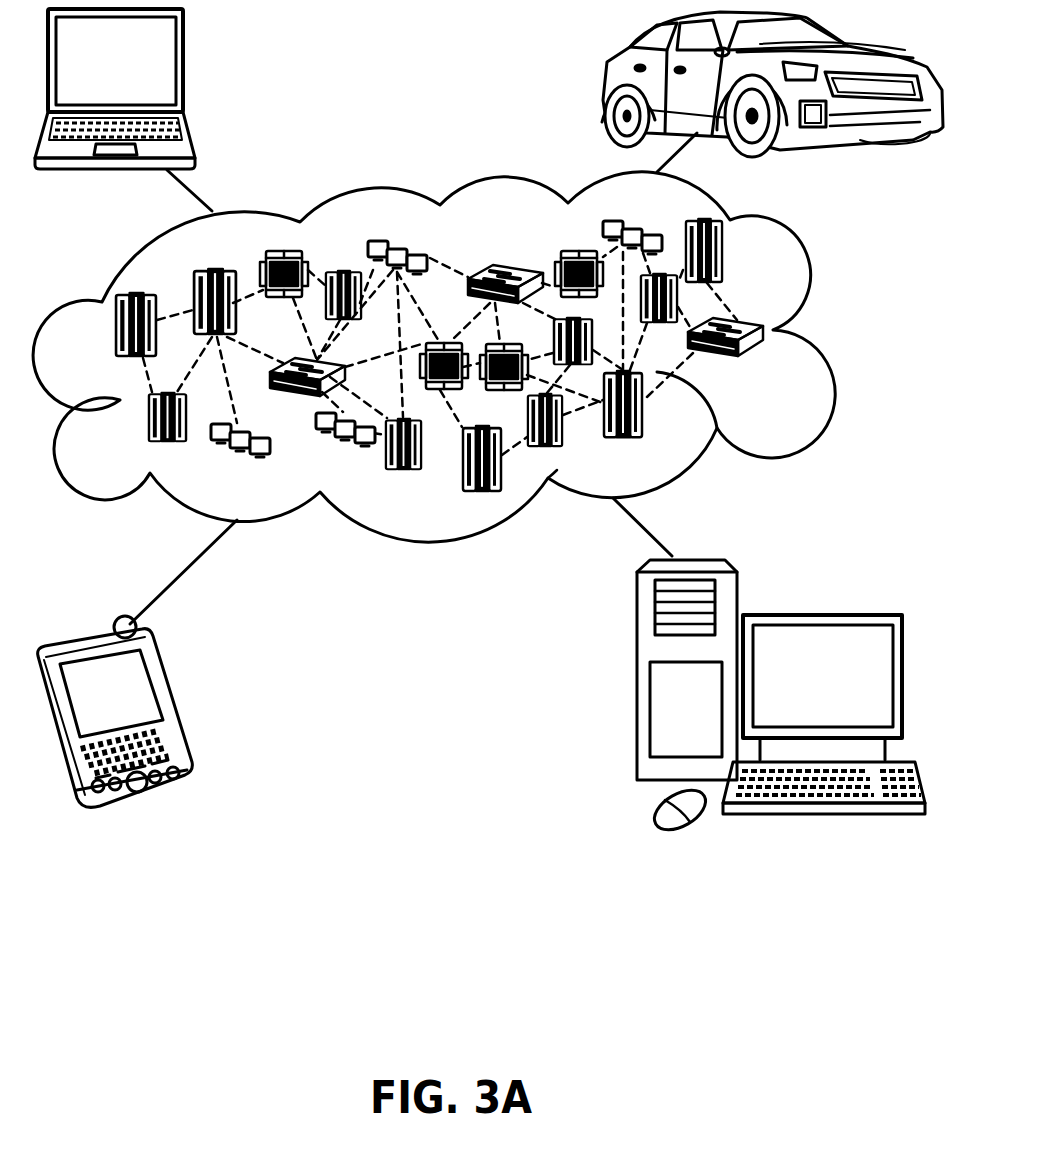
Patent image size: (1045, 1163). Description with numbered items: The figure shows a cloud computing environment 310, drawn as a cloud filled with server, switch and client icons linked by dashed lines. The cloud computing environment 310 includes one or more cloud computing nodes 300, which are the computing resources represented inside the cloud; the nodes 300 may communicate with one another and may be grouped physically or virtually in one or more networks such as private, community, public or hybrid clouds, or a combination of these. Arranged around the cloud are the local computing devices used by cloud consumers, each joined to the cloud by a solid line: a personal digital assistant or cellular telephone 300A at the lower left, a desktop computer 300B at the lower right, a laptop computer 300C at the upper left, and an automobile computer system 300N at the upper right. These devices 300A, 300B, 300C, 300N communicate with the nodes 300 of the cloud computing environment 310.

The cloud computing nodes 300 is at (772, 365).
The cloud computing environment 310 is at (820, 333).
The personal digital assistant (PDA) or cellular telephone 300A is at (173, 707).
The desktop computer 300B is at (820, 613).
The laptop computer 300C is at (183, 70).
The automobile computer system 300N is at (606, 80).